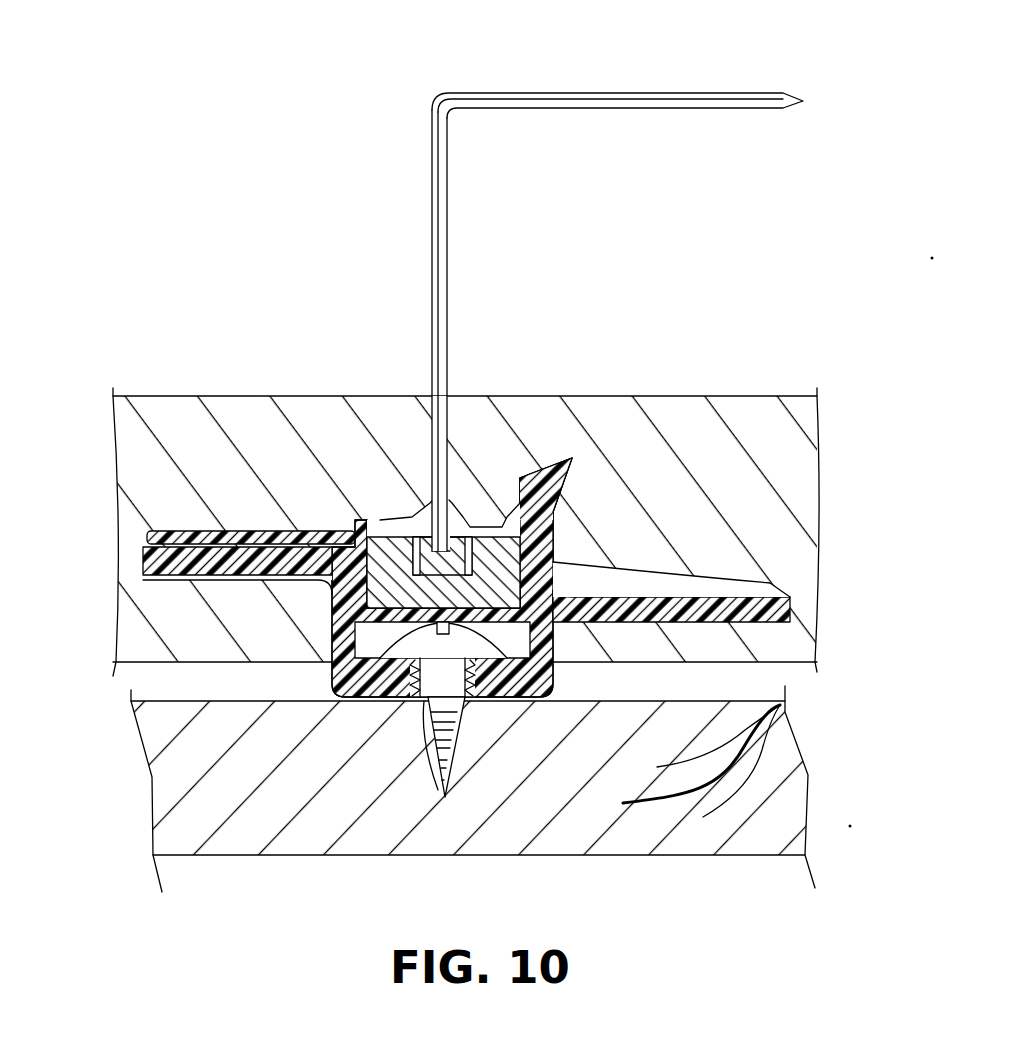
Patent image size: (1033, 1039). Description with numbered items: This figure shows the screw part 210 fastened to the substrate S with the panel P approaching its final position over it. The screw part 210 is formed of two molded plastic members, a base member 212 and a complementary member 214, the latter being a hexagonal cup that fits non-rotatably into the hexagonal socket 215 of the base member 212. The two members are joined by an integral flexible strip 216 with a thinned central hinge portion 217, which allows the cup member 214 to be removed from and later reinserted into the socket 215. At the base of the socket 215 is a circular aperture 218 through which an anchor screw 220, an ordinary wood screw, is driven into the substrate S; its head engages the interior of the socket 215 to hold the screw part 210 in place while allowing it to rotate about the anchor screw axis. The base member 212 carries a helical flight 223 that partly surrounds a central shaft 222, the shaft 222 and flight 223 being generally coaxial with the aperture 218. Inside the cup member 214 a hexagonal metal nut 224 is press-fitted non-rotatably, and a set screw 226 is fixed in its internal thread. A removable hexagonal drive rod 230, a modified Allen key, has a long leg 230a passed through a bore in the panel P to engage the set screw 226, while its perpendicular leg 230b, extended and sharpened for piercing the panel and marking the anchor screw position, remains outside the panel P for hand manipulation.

The panel P is at (708, 382).
The substrate S is at (575, 830).
The screw part 210 is at (808, 603).
The base member 212 is at (556, 675).
The complementary member 214 is at (517, 530).
The socket 215 is at (531, 514).
The flexible strip 216 is at (232, 531).
The central hinge portion 217 is at (145, 546).
The circular aperture 218 is at (420, 703).
The anchor screw 220 is at (447, 796).
The central shaft 222 is at (550, 513).
The helical flight 223 is at (182, 578).
The hexagonal metal nut 224 is at (395, 522).
The set screw 226 is at (388, 556).
The drive rod 230 is at (548, 291).
The long leg of drive rod 230a is at (432, 283).
The extended sharpened leg of drive rod 230b is at (603, 93).